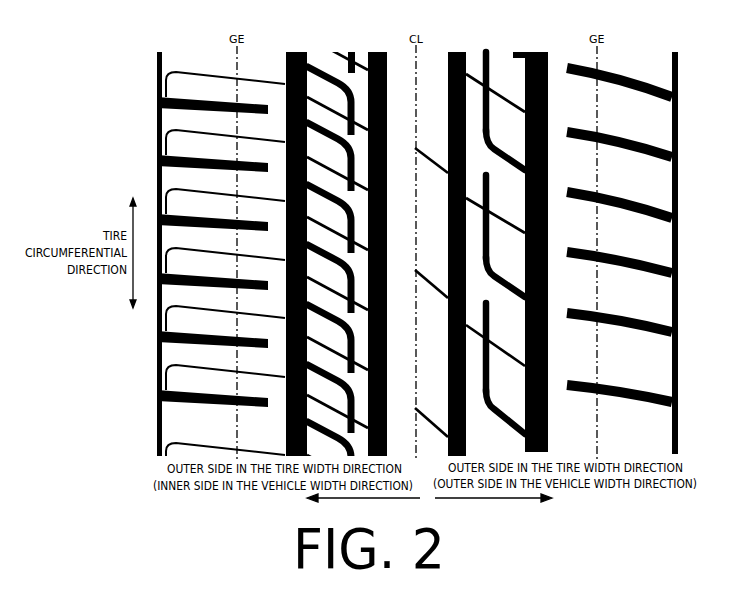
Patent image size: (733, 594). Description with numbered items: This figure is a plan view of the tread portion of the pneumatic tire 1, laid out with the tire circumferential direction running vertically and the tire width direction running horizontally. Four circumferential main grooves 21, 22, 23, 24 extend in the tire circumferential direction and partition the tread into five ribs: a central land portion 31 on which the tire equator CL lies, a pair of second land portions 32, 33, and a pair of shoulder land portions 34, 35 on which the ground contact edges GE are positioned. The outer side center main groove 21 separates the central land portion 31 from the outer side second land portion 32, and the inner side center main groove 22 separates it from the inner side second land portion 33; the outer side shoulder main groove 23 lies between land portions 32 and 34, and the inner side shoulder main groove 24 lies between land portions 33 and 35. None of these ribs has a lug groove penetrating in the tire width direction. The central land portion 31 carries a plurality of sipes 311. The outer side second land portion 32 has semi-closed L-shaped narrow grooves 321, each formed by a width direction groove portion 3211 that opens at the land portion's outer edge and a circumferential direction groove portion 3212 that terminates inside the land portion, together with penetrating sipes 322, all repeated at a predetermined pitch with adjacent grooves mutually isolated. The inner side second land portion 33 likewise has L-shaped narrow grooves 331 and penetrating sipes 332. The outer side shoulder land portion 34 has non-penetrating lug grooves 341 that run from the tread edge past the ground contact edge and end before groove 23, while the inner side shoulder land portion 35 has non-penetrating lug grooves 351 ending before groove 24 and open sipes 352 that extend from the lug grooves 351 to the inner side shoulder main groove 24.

The pneumatic tire 1 is at (649, 36).
The outer side center main groove 21 is at (459, 52).
The inner side center main groove 22 is at (375, 52).
The outer side shoulder main groove 23 is at (537, 52).
The inner side shoulder main groove 24 is at (294, 52).
The central land portion 31 is at (439, 53).
The sipe 311 is at (433, 171).
The outer side second land portion 32 is at (506, 52).
The L-shaped narrow groove 321 is at (484, 52).
The width direction groove portion 3211 is at (508, 157).
The circumferential direction groove portion 3212 is at (488, 127).
The penetrating sipe 322 is at (512, 100).
The inner side second land portion 33 is at (323, 53).
The L-shaped narrow groove 331 is at (323, 77).
The penetrating sipe 332 is at (323, 103).
The outer side shoulder land portion 34 is at (632, 56).
The non-penetrating lug groove 341 is at (626, 88).
The inner side shoulder land portion 35 is at (202, 58).
The non-penetrating lug groove 351 is at (210, 105).
The sipe 352 is at (211, 72).